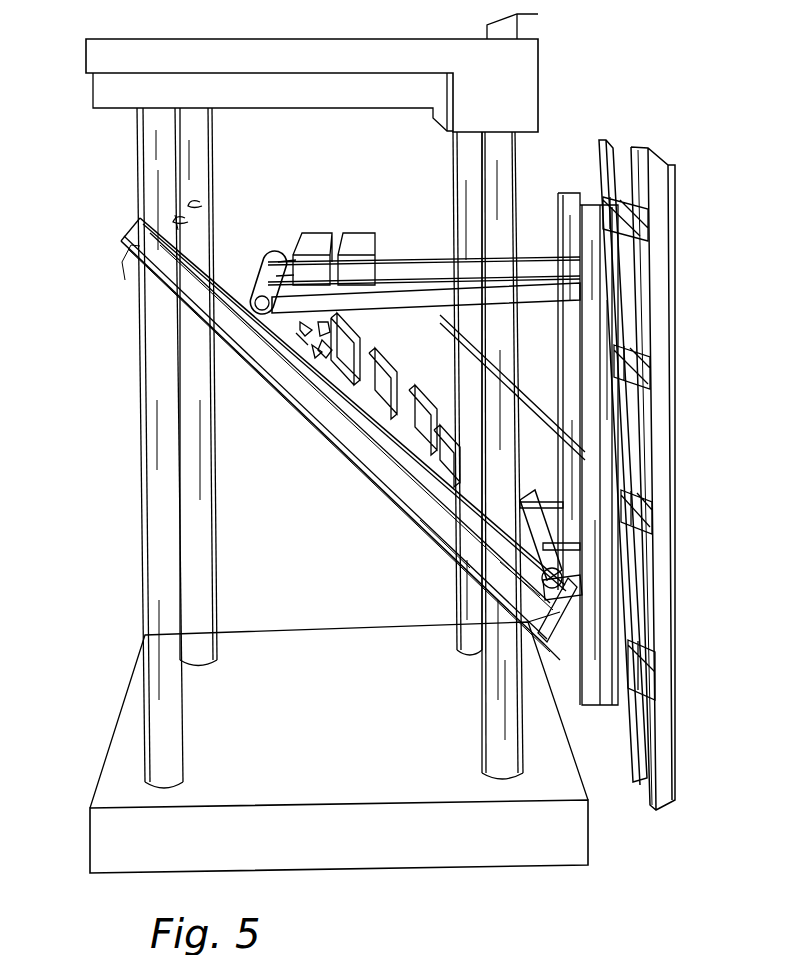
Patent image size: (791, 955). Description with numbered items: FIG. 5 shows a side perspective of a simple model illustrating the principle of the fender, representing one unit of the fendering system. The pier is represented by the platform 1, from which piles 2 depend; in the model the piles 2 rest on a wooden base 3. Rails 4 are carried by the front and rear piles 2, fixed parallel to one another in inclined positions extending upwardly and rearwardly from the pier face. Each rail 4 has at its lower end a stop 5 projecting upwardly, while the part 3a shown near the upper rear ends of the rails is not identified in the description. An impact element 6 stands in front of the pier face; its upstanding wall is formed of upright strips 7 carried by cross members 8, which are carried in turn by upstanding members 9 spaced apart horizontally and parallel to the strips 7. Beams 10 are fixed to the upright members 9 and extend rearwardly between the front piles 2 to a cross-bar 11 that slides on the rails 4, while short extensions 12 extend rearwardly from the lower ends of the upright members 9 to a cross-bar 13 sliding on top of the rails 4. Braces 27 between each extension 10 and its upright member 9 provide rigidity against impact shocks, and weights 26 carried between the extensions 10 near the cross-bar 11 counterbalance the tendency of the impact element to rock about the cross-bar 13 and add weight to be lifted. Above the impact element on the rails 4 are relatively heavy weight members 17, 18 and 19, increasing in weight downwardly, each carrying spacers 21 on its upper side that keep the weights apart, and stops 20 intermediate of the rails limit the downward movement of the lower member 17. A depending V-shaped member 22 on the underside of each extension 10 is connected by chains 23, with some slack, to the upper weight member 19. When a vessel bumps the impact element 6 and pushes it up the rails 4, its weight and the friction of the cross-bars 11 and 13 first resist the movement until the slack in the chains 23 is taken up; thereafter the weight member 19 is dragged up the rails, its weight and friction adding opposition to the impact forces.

The platform 1 is at (143, 56).
The piles 2 is at (193, 147).
The wooden base 3 is at (125, 776).
The hook brackets 3a is at (190, 220).
The rails 4 is at (145, 254).
The stop 5 is at (545, 630).
The impact element 6 is at (680, 344).
The upright strips 7 is at (640, 182).
The cross members 8 is at (628, 383).
The upstanding members 9 is at (575, 195).
The beams 10 is at (416, 286).
The cross-bar 11 is at (265, 255).
The short extensions 12 is at (548, 505).
The cross-bar 13 is at (535, 557).
The weight member 17 is at (430, 487).
The weight member 18 is at (362, 432).
The weight member 19 is at (312, 396).
The stops 20 is at (455, 530).
The spacer 21 is at (322, 418).
The V-shaped member 22 is at (258, 347).
The chains 23 is at (290, 366).
The weights 26 is at (318, 252).
The braces 27 is at (546, 412).